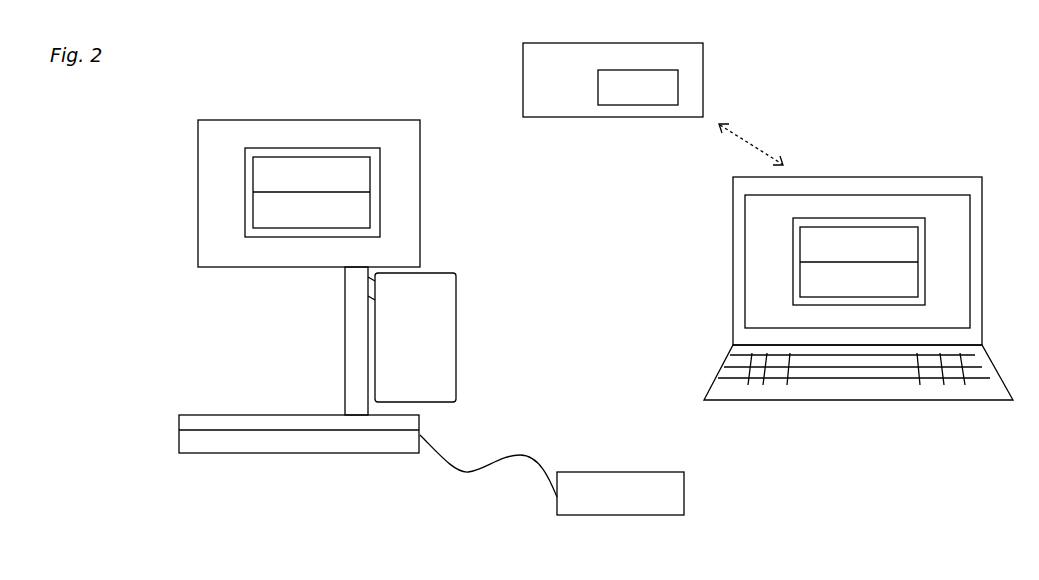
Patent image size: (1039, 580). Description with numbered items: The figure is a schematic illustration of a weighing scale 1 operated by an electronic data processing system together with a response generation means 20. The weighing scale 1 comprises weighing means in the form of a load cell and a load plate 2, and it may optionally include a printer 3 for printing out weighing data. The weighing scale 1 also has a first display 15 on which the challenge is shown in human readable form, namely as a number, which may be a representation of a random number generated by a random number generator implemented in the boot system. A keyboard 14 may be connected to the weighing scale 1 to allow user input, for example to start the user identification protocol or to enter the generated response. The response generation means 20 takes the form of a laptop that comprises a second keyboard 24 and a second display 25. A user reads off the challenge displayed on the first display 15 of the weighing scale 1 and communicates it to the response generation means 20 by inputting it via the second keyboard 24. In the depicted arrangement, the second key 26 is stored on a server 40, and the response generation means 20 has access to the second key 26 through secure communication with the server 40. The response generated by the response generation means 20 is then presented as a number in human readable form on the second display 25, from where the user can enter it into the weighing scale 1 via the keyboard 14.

The weighing scale 1 is at (261, 93).
The load plate 2 is at (225, 415).
The printer 3 is at (440, 273).
The keyboard 14 is at (590, 517).
The first display 15 is at (198, 165).
The response generation means 20 is at (870, 158).
The second keyboard 24 is at (723, 365).
The second display 25 is at (983, 238).
The second key 26 is at (680, 87).
The server 40 is at (592, 43).